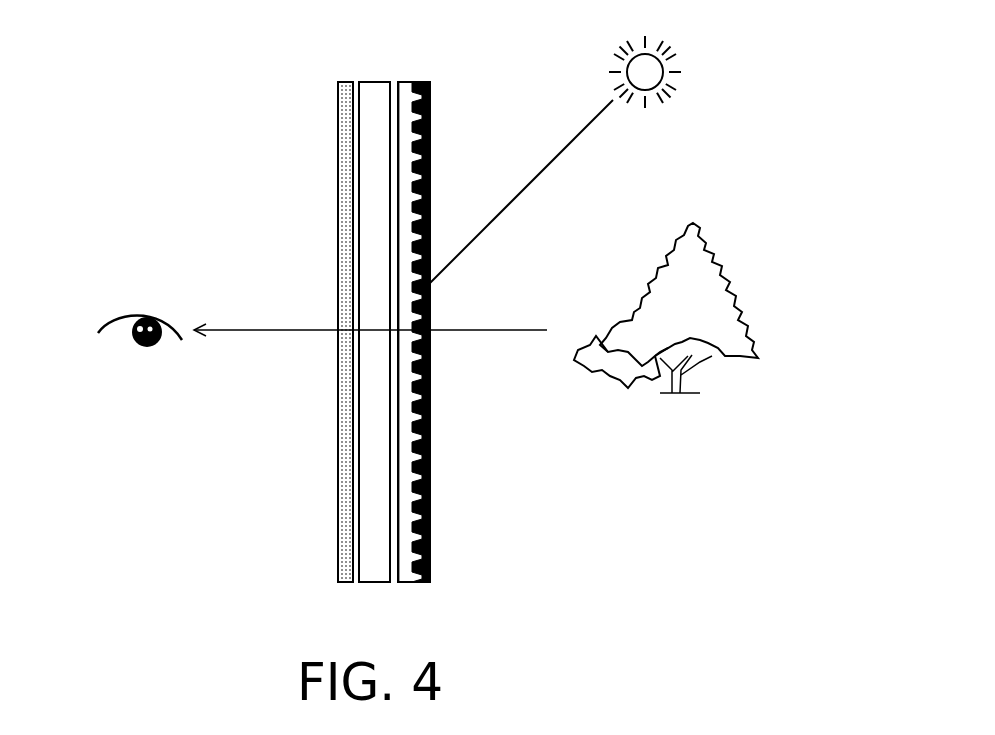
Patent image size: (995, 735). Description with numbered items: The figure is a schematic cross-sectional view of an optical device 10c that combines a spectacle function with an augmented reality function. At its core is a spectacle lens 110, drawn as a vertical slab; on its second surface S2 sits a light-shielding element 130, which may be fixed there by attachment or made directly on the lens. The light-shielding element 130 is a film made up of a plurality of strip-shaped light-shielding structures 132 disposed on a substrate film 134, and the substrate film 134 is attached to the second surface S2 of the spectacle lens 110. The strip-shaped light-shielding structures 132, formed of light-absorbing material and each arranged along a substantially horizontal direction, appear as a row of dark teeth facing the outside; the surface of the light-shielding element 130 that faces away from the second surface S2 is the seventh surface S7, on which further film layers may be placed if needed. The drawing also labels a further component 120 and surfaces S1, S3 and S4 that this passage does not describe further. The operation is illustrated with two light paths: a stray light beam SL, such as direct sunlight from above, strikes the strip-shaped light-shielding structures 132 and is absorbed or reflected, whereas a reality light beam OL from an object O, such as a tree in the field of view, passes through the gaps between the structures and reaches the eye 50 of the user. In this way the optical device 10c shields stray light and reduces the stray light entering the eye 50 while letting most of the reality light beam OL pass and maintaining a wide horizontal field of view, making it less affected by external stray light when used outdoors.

The optical device 10c is at (638, 633).
The eye 50 is at (113, 345).
The spectacle lens 110 is at (370, 535).
The anti-reflection / light absorbing layer 120 is at (342, 115).
The light-shielding element 130 is at (395, 299).
The strip-shaped light-shielding structures 132 is at (428, 100).
The substrate film 134 is at (405, 88).
The first surface S1 is at (360, 440).
The second surface S2 is at (390, 560).
The third surface S3 is at (337, 203).
The fourth surface S4 is at (361, 234).
The seventh surface S7 is at (431, 443).
The stray light beam SL is at (556, 153).
The reality light beam OL is at (497, 328).
The object O is at (717, 273).